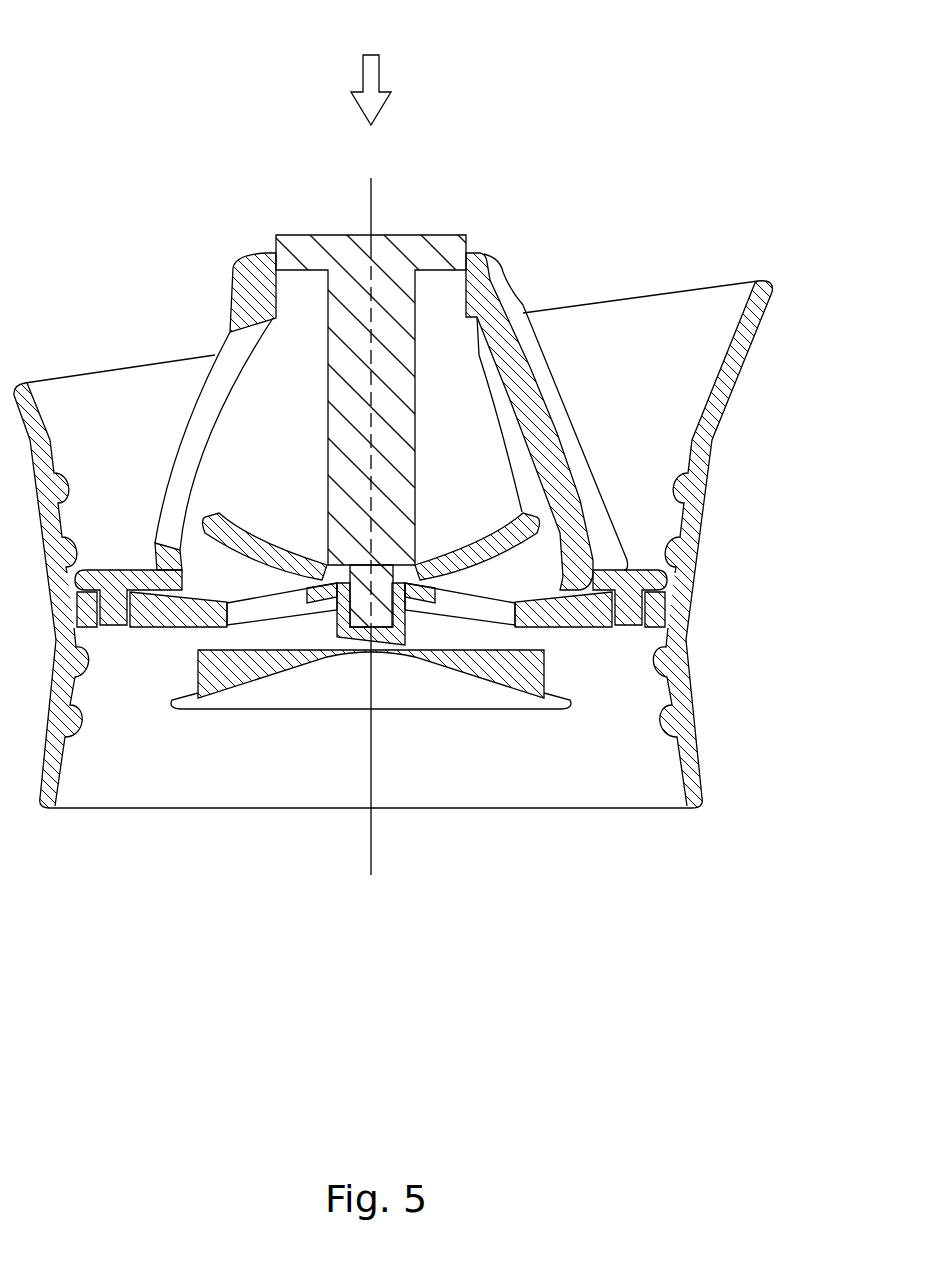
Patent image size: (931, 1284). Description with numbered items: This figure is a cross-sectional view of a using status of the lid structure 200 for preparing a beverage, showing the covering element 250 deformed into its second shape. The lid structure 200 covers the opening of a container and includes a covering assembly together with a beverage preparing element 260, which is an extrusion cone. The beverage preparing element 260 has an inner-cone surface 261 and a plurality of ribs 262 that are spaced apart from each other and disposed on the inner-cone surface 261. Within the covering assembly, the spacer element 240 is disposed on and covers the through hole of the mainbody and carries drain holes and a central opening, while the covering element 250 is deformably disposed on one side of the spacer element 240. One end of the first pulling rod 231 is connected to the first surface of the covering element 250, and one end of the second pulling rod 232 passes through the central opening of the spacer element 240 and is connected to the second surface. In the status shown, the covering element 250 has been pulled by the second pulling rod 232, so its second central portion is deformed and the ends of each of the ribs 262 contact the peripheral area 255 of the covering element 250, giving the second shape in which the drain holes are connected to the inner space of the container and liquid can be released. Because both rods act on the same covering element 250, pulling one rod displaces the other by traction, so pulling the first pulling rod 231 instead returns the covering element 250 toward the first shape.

The lid structure for preparing the beverage 200 is at (88, 39).
The first pulling rod 231 is at (340, 298).
The second pulling rod 232 is at (347, 617).
The spacer element 240 is at (530, 679).
The covering element 250 is at (597, 570).
The peripheral area 255 is at (543, 527).
The beverage preparing element 260 is at (510, 340).
The inner-cone surface 261 is at (523, 412).
The ribs 262 is at (527, 465).